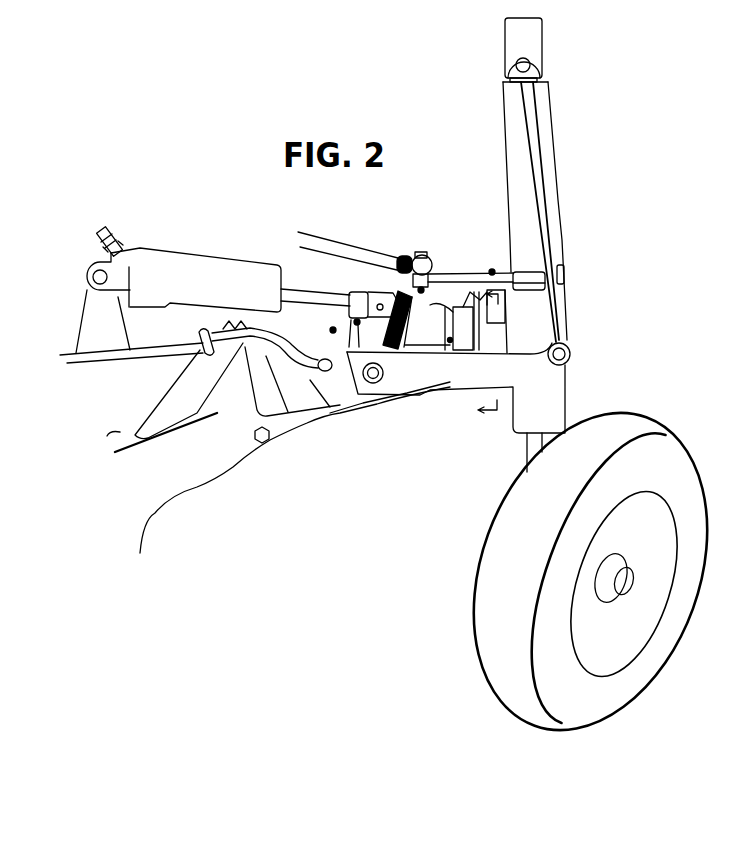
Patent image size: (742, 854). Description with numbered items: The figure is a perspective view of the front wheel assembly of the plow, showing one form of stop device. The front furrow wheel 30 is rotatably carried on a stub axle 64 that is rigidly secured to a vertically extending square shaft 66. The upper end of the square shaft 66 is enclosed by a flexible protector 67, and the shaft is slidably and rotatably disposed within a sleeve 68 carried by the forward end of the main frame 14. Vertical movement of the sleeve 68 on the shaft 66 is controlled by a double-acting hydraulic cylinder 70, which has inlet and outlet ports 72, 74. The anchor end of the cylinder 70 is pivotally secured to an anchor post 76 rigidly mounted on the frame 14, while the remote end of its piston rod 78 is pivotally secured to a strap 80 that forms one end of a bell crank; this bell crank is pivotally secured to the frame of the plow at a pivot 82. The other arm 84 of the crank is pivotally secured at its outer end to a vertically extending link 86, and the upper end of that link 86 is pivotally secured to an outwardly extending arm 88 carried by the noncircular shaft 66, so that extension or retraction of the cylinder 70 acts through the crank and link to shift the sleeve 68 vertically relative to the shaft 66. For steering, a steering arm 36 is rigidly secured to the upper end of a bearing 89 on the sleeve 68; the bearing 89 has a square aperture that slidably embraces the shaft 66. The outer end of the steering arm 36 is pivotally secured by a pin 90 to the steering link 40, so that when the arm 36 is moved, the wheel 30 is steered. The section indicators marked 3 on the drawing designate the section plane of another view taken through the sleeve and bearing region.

The main frame 14 is at (143, 424).
The front furrow wheel 30 is at (680, 452).
The steering arm 36 is at (465, 274).
The steering link 40 is at (345, 248).
The stub axle 64 is at (624, 593).
The square shaft 66 is at (528, 453).
The flexible protector 67 is at (553, 207).
The sleeve 68 is at (565, 387).
The double-acting hydraulic cylinder 70 is at (220, 268).
The inlet and outlet port 72 is at (101, 228).
The inlet and outlet port 74 is at (116, 238).
The anchor post 76 is at (118, 332).
The piston rod 78 is at (348, 308).
The strap 80 is at (400, 293).
The bell crank pivot 82 is at (383, 373).
The other arm of the crank 84 is at (445, 380).
The vertically extending link 86 is at (537, 153).
The outwardly extending arm 88 is at (537, 33).
The bearing 89 is at (564, 273).
The pin 90 is at (422, 255).
The section line 3- 3 is at (497, 362).